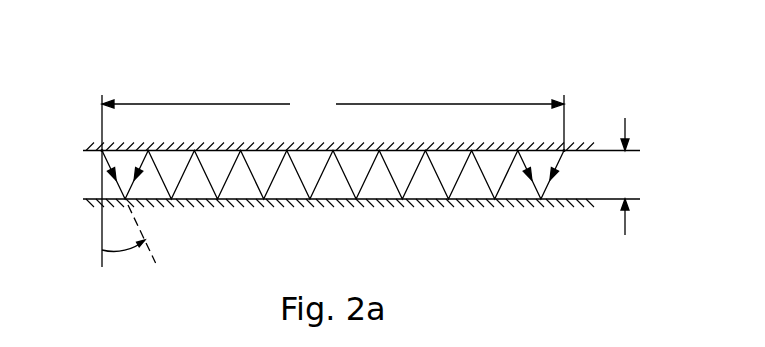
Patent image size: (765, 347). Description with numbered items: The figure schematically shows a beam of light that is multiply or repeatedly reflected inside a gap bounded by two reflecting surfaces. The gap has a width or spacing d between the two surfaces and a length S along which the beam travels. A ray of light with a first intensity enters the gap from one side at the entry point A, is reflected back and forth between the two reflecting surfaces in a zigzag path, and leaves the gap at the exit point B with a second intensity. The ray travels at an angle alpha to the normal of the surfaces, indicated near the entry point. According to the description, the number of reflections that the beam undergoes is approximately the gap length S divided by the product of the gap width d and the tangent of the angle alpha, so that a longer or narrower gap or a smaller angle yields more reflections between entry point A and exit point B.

The entry point A is at (102, 150).
The exit point B is at (564, 150).
The gap length S is at (333, 104).
The gap width d is at (623, 176).
The angle of incidence alpha is at (129, 234).